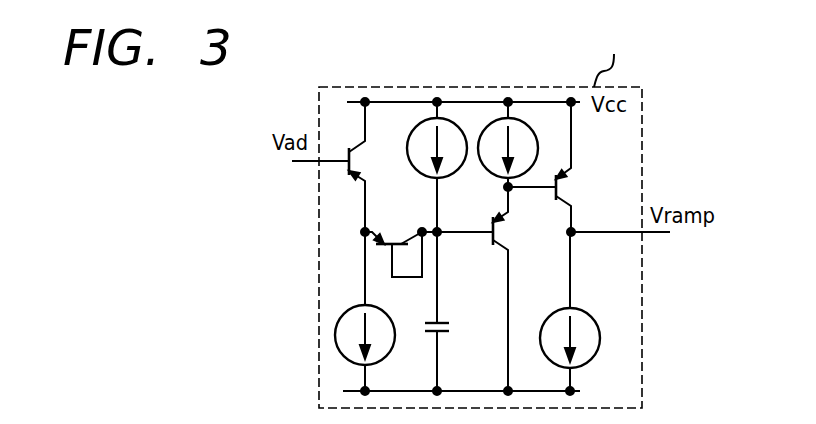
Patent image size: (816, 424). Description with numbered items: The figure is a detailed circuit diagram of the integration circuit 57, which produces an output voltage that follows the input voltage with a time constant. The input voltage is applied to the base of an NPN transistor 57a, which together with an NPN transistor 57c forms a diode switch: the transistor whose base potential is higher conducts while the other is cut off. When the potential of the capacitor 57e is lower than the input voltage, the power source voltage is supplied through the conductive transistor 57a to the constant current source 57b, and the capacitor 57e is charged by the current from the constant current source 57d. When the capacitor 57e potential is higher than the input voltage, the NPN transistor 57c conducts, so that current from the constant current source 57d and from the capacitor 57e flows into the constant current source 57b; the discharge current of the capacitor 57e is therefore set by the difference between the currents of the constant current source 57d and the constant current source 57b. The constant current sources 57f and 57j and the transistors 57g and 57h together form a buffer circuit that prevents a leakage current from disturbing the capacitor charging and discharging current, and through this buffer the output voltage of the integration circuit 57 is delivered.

The integration circuit 57 is at (630, 51).
The NPN transistor 57a is at (372, 167).
The constant current source 57b is at (391, 349).
The NPN transistor 57c is at (393, 240).
The constant current source 57d is at (452, 176).
The capacitor 57e is at (459, 326).
The constant current source 57f is at (535, 162).
The transistor 57g is at (519, 289).
The transistor 57h is at (584, 167).
The constant current source 57j is at (592, 318).